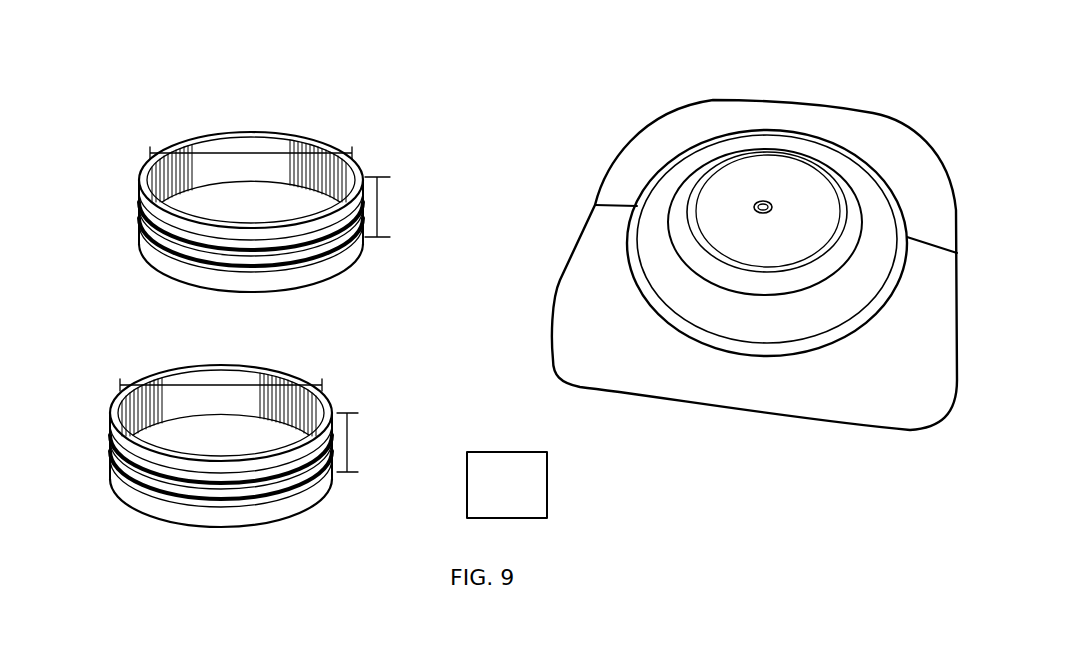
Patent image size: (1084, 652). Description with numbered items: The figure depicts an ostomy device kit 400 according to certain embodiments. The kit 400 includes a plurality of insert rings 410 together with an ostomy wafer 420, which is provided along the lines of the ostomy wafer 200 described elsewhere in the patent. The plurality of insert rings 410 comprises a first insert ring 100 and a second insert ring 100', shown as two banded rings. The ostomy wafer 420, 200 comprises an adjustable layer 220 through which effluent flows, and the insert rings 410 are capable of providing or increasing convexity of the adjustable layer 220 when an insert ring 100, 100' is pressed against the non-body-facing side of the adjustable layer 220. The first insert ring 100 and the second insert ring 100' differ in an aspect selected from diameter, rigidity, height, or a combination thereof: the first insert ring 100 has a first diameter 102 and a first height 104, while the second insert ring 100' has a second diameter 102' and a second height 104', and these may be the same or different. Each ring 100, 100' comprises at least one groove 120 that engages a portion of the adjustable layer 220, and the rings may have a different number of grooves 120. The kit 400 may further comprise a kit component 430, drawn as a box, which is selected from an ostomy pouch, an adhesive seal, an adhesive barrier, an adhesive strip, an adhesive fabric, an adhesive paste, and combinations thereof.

The kit 400 is at (318, 51).
The first insert ring 100 is at (263, 195).
The second insert ring 100' is at (234, 429).
The first diameter 102 is at (251, 128).
The second diameter 102' is at (221, 361).
The first height 104 is at (403, 207).
The second height 104' is at (378, 442).
The groove 120 is at (143, 207).
The plurality of insert rings 410 is at (410, 181).
The ostomy wafer 200 is at (574, 156).
The adjustable layer 220 is at (840, 183).
The ostomy wafer 420 is at (545, 261).
The kit component 430 is at (500, 452).